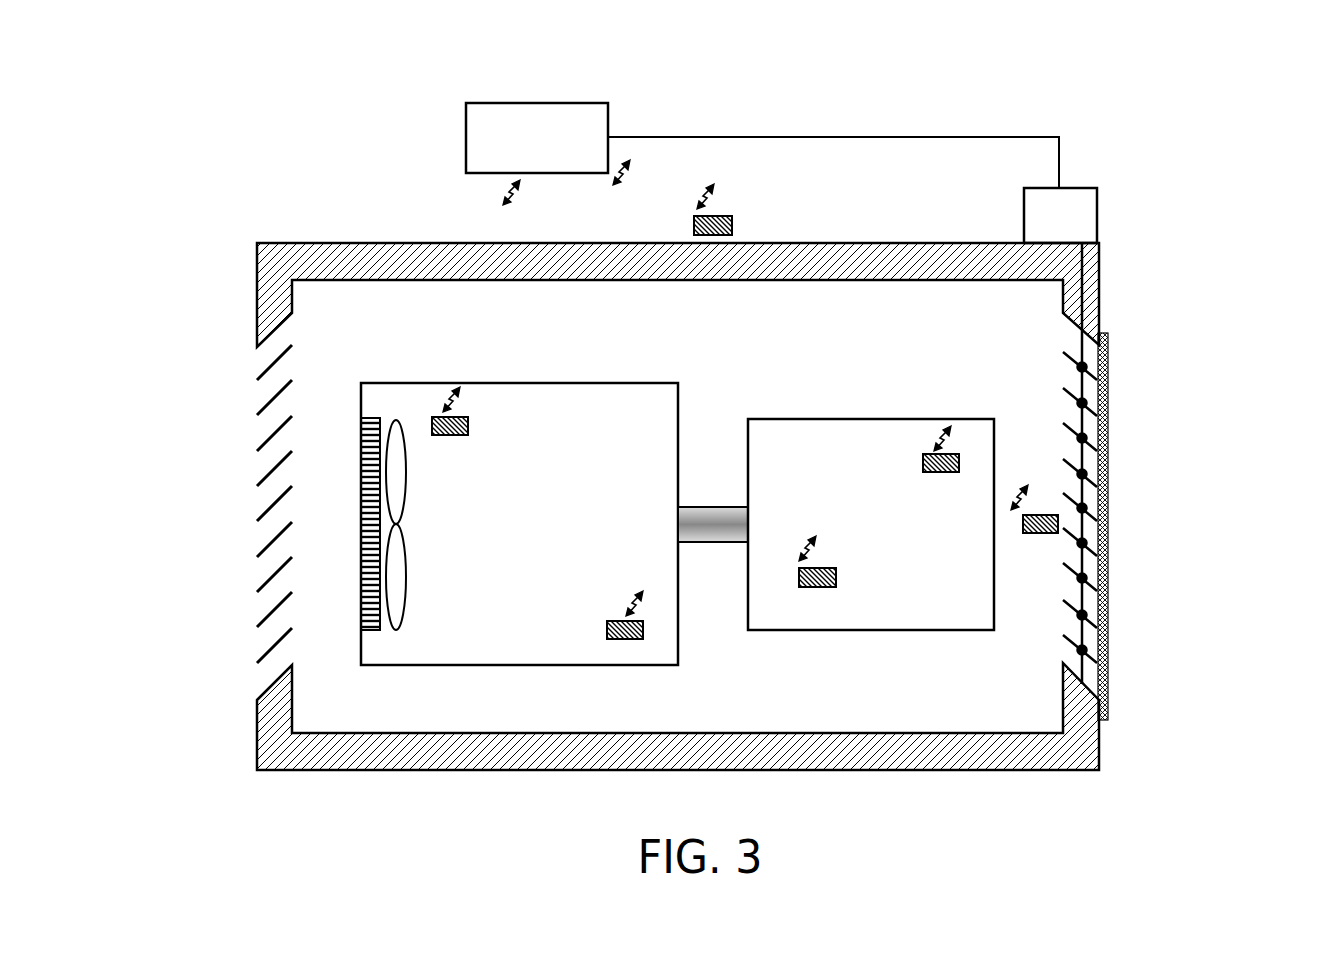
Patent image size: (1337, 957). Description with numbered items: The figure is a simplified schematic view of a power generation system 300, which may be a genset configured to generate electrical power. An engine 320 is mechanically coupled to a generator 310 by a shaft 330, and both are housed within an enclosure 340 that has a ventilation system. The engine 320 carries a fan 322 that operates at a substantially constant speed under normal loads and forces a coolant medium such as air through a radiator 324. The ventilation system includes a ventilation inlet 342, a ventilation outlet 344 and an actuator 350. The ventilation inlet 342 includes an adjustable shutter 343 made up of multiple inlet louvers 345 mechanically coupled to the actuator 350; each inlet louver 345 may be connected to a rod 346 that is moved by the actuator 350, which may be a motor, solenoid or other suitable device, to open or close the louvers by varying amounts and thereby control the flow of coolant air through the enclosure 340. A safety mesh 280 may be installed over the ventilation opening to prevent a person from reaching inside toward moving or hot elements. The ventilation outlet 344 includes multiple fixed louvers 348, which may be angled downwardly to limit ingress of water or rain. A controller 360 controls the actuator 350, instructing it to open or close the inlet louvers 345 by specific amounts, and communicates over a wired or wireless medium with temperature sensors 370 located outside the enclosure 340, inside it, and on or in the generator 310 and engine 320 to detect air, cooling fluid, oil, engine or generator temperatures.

The power generation system 300 is at (1073, 96).
The enclosure 340 is at (293, 243).
The ventilation outlet 344 is at (219, 452).
The fixed louvers 348 is at (270, 612).
The ventilation inlet 342 is at (1213, 440).
The adjustable shutter 343 is at (1116, 512).
The safety mesh 280 is at (1108, 580).
The rod 346 is at (1087, 358).
The inlet louvers 345 is at (1100, 655).
The actuator 350 is at (1036, 232).
The controller 360 is at (514, 154).
The engine 320 is at (514, 536).
The fan 322 is at (397, 421).
The radiator 324 is at (386, 630).
The shaft 330 is at (708, 507).
The generator 310 is at (860, 536).
The temperature sensors 370 is at (732, 219).